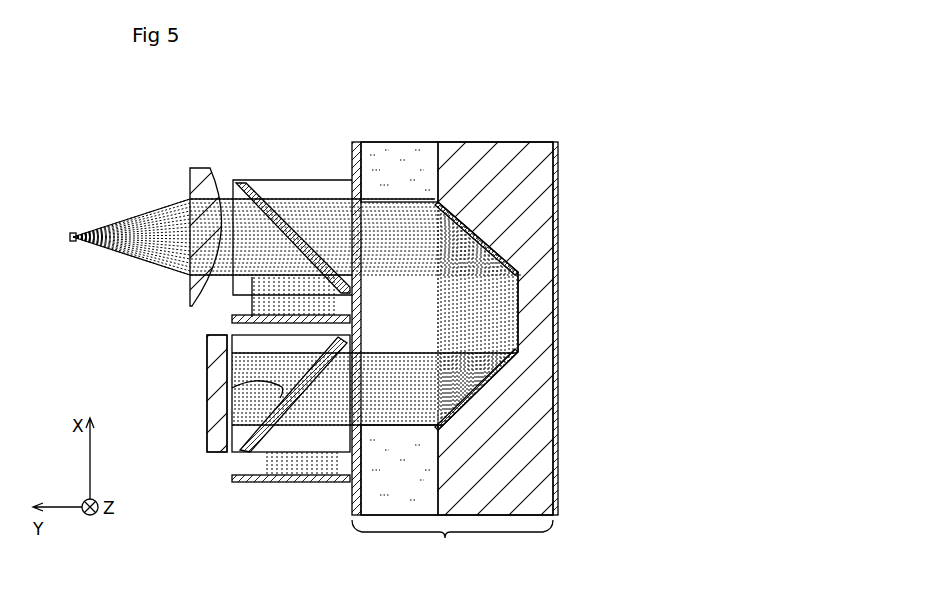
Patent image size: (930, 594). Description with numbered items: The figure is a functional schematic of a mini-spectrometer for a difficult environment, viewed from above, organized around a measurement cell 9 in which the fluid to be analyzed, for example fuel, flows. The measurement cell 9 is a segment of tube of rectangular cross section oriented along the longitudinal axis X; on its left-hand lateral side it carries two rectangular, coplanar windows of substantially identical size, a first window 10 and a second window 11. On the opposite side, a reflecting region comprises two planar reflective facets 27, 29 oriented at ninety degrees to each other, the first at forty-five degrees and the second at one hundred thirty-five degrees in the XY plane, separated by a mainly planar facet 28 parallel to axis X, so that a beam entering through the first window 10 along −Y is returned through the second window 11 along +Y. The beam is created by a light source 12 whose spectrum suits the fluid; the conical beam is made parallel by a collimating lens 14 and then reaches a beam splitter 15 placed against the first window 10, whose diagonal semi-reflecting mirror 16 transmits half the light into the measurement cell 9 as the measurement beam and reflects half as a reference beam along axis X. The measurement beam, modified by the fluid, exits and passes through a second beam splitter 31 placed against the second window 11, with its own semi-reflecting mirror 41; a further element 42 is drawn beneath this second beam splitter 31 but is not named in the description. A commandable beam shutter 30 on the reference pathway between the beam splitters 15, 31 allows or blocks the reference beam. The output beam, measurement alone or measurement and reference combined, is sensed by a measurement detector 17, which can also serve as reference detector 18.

The measurement cell 9 is at (453, 337).
The first window 10 is at (360, 182).
The second window 11 is at (366, 462).
The light source 12 is at (75, 233).
The collimating lens 14 is at (205, 168).
The beam splitter 15 is at (315, 180).
The semi-reflecting mirror 16 is at (268, 185).
The measurement detector 17 is at (207, 355).
The reference detector 18 is at (217, 393).
The first reflective facet 27 is at (487, 240).
The facet 28 is at (517, 340).
The second reflective facet 29 is at (500, 378).
The beam shutter 30 is at (230, 320).
The second beam splitter 31 is at (250, 452).
The semi-reflecting mirror 41 is at (210, 397).
The detector plate 42 is at (290, 478).